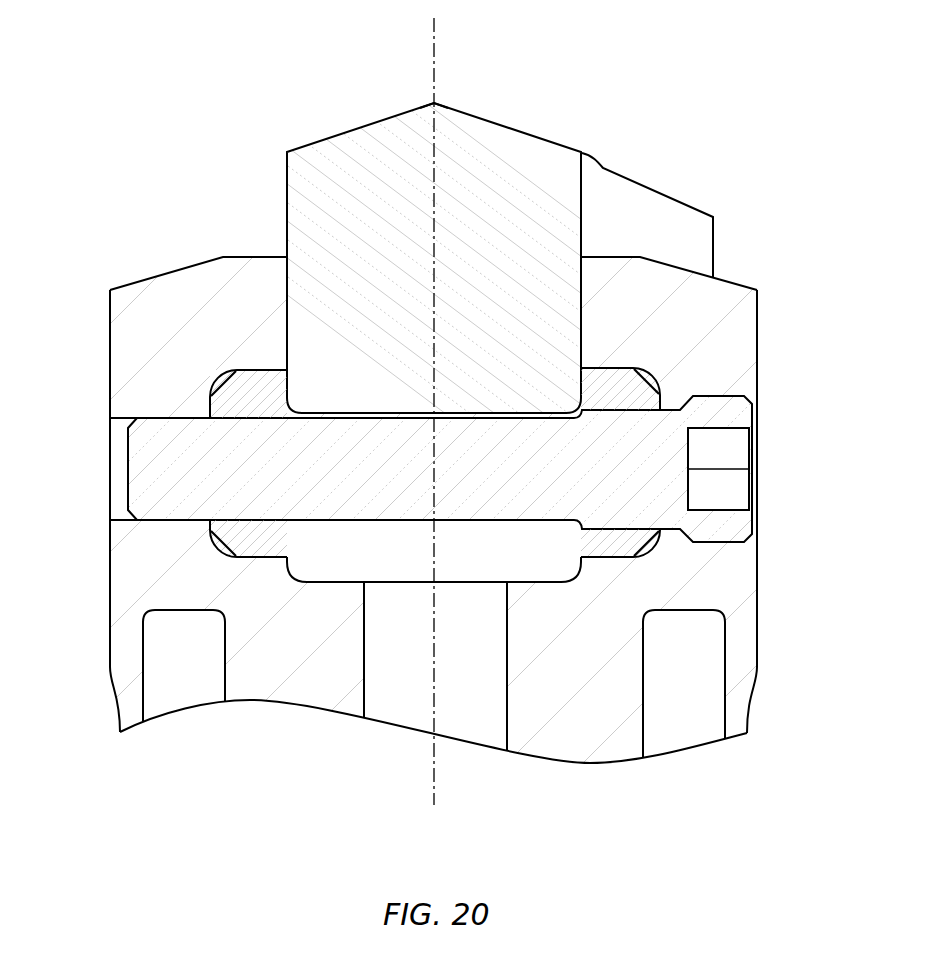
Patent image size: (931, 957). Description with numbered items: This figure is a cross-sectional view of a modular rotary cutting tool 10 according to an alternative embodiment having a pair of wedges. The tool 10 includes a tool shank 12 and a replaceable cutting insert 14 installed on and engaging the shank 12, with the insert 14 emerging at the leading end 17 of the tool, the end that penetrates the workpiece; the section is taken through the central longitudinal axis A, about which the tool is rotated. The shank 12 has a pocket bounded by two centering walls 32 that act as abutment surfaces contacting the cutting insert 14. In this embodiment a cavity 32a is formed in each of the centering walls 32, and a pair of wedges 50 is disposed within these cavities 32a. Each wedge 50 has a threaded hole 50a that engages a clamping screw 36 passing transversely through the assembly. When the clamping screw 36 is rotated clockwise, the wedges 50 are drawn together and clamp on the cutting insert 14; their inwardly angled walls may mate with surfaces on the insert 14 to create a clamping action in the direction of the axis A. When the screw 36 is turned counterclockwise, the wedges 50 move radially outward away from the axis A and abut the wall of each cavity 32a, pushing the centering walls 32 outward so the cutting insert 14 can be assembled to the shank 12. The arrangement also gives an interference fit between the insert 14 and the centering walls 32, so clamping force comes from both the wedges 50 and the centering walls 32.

The rotary cutting tool 10 is at (163, 103).
The tool shank 12 is at (770, 645).
The cutting insert 14 is at (299, 136).
The leading end 17 is at (430, 97).
The central longitudinal axis A is at (437, 42).
The centering walls 32 is at (293, 292).
The cavity 32a is at (242, 553).
The clamping screw 36 is at (761, 492).
The wedges 50 is at (271, 364).
The threaded holes 50a is at (252, 416).